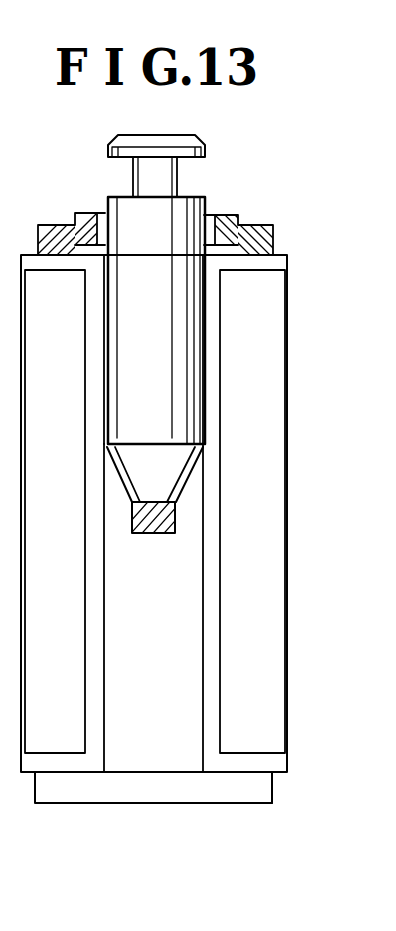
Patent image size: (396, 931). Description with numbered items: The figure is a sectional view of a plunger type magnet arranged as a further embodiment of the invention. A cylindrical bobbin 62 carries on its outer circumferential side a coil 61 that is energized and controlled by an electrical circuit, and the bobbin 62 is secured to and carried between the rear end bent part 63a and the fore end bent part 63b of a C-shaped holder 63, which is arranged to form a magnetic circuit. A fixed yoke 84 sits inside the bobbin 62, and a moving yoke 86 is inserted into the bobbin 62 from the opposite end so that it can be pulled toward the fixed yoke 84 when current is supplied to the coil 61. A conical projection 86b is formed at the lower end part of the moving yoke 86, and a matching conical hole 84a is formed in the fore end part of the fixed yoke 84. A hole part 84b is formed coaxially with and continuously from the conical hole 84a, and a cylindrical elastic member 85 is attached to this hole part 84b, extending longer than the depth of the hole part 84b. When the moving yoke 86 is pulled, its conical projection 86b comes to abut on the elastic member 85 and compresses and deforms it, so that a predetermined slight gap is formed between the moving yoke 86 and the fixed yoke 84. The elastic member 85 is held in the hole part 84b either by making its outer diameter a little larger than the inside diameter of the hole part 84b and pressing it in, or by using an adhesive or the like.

The coil 61 is at (252, 690).
The bobbin 62 is at (213, 409).
The holder 63 is at (152, 792).
The rear end bent part 63a is at (243, 792).
The fore end bent part 63b is at (262, 225).
The fixed yoke 84 is at (172, 640).
The conical hole 84a is at (180, 492).
The hole part 84b is at (150, 533).
The elastic member 85 is at (163, 520).
The moving yoke 86 is at (155, 363).
The conical projection 86b is at (162, 470).